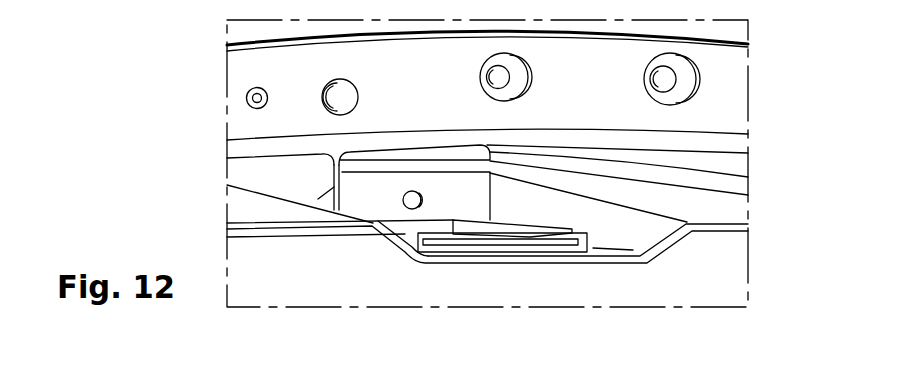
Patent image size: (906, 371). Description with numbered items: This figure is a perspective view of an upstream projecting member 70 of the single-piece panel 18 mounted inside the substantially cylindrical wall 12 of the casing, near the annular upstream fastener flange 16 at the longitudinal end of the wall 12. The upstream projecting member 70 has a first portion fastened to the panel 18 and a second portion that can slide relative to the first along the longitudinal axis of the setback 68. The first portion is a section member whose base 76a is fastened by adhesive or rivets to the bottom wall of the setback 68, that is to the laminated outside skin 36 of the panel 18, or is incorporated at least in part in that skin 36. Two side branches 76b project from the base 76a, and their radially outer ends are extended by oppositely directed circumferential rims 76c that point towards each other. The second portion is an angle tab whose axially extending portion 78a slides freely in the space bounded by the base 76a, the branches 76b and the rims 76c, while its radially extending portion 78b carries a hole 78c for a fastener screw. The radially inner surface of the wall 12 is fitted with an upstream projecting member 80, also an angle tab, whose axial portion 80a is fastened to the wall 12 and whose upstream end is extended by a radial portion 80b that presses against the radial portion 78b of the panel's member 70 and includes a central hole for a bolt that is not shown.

The wall 12 is at (178, 93).
The upstream flange 16 is at (700, 115).
The panel 18 is at (717, 277).
The outside skin 36 is at (603, 262).
The setback 68 is at (646, 231).
The upstream projecting member 70 is at (568, 200).
The base 76a is at (487, 247).
The side branches 76b is at (403, 240).
The circumferential rims 76c is at (444, 246).
The axially extending portion 78a is at (503, 240).
The radially extending portion 78b is at (352, 172).
The hole 78c is at (408, 199).
The upstream projecting member 80 is at (308, 169).
The axial portion 80a is at (272, 155).
The radial portion 80b is at (395, 172).